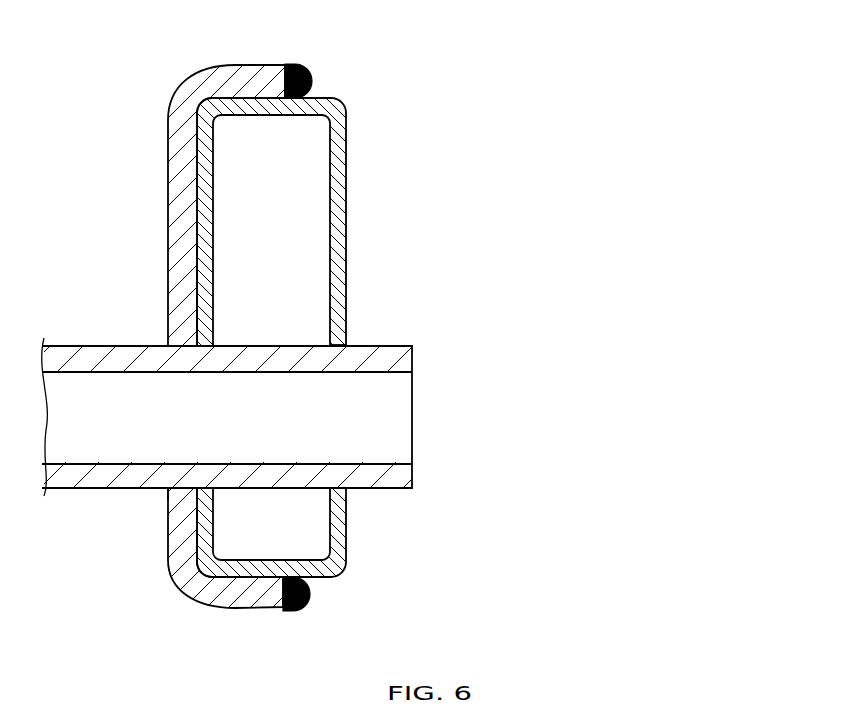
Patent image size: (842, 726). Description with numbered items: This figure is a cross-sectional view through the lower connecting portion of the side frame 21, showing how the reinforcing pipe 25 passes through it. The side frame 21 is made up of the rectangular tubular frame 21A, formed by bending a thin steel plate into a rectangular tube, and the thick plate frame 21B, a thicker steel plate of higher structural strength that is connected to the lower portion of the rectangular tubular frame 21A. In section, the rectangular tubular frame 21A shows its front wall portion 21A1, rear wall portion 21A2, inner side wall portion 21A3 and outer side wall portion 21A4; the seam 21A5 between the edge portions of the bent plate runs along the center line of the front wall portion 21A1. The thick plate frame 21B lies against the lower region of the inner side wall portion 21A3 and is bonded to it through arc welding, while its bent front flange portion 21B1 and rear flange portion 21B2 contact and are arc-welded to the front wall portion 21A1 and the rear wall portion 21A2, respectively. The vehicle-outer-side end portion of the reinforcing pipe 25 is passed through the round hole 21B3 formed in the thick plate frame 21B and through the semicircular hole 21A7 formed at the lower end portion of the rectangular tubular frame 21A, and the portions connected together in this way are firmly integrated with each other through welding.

The side frame 21 is at (288, 346).
The rectangular tubular frame 21A is at (262, 356).
The front wall portion 21A1 is at (228, 585).
The rear wall portion 21A2 is at (330, 93).
The inner side wall portion 21A3 is at (205, 225).
The outer side wall portion 21A4 is at (345, 220).
The seam 21A5 is at (262, 570).
The semicircular hole 21A7 is at (344, 352).
The thick plate frame 21B is at (190, 346).
The front flange portion 21B1 is at (260, 592).
The rear flange portion 21B2 is at (252, 85).
The round hole 21B3 is at (177, 487).
The reinforcing pipe 25 is at (398, 358).